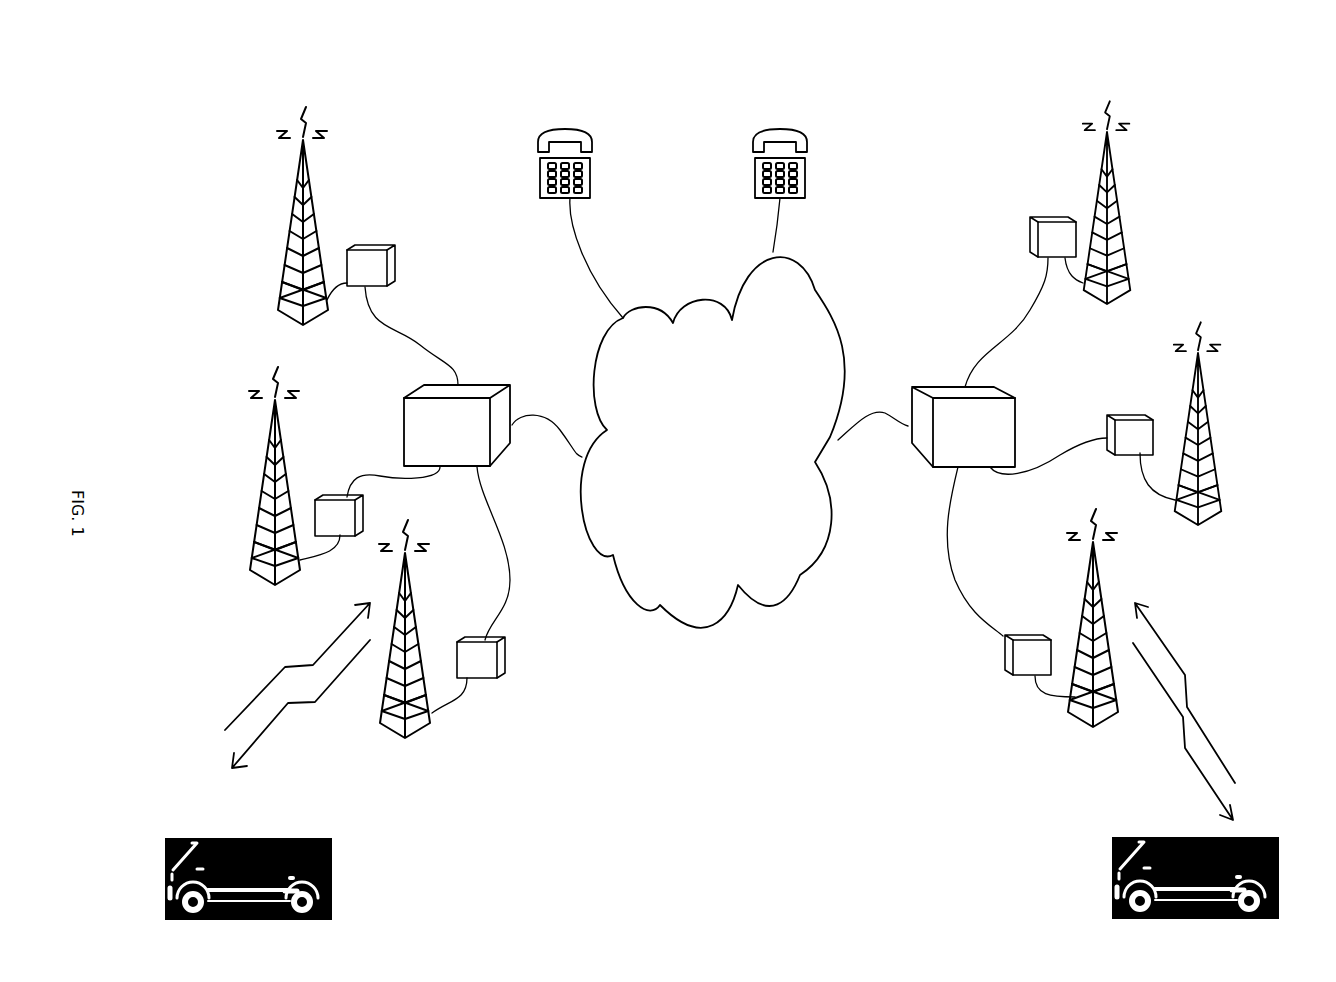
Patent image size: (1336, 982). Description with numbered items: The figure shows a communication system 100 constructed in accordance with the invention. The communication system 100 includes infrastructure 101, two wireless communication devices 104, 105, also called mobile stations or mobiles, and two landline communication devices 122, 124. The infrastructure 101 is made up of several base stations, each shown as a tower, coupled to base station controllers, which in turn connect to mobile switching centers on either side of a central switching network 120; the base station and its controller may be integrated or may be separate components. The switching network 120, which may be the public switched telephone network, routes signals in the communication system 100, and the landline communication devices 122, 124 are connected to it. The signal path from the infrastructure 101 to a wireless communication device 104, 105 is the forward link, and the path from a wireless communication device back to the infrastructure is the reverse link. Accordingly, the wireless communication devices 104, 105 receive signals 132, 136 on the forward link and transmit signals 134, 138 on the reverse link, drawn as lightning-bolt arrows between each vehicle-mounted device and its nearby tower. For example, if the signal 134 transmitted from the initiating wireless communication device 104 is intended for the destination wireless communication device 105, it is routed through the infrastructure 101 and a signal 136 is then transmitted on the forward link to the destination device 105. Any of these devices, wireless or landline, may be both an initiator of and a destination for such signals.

The communication system 100 is at (1252, 62).
The infrastructure 101 is at (772, 737).
The wireless communication device 104 is at (332, 907).
The wireless communication device 105 is at (1279, 907).
The switching network 120 is at (814, 300).
The landline communication device 122 is at (795, 130).
The landline communication device 124 is at (580, 130).
The forward link signal 132 is at (315, 683).
The reverse link signal 134 is at (333, 630).
The forward link signal 136 is at (1207, 768).
The reverse link signal 138 is at (1200, 707).